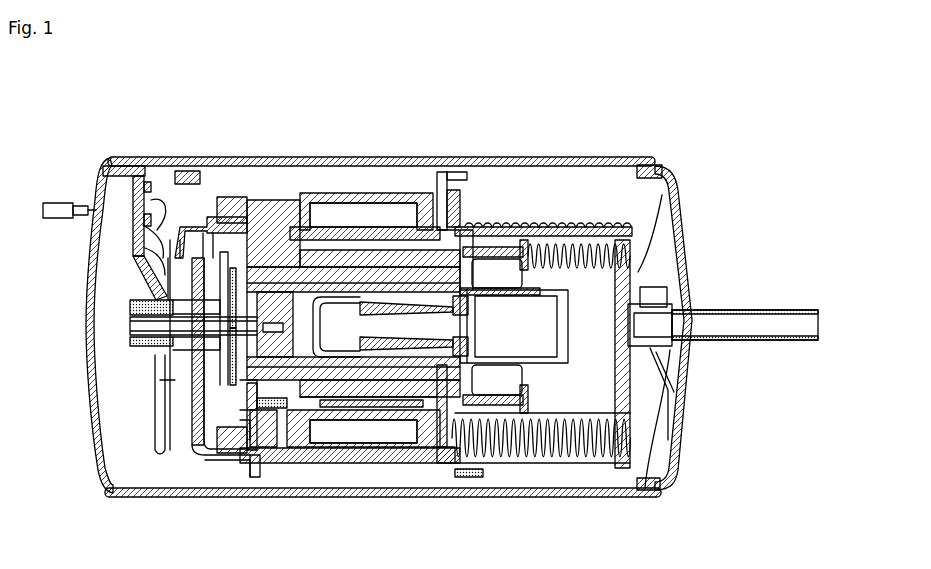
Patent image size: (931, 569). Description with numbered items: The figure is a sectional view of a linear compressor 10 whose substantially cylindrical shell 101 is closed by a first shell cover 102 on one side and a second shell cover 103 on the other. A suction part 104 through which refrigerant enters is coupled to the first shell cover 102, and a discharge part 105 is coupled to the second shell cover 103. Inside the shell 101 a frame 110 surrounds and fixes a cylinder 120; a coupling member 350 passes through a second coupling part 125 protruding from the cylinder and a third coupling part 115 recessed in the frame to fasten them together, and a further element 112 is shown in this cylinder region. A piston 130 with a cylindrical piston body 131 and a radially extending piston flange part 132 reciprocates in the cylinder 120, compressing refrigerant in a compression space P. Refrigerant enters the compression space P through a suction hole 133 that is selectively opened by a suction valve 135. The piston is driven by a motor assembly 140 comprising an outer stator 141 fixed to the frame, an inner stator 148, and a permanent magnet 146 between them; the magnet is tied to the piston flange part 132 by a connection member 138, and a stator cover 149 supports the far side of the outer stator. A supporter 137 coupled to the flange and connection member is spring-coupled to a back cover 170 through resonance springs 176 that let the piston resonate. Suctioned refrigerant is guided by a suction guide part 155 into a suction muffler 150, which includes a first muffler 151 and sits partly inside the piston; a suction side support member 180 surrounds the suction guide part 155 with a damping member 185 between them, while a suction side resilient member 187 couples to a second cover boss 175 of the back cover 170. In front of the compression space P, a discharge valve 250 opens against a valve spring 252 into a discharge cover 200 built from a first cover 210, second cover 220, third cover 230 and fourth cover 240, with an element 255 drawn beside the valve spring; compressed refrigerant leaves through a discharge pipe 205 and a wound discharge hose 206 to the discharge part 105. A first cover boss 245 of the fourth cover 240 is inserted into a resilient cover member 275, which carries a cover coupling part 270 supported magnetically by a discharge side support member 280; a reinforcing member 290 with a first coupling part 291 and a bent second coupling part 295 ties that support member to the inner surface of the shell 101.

The linear compressor 10 is at (566, 112).
The shell 101 is at (222, 158).
The first shell cover 102 is at (686, 216).
The second shell cover 103 is at (92, 420).
The suction part 104 is at (786, 308).
The discharge part 105 is at (57, 200).
The frame 110 is at (255, 197).
The rotor core 112 is at (296, 250).
The third coupling part 115 is at (280, 395).
The cylinder 120 is at (272, 200).
The second coupling part 125 is at (268, 415).
The piston 130 is at (250, 418).
The piston body 131 is at (350, 415).
The piston flange part 132 is at (456, 440).
The suction hole 133 is at (292, 402).
The suction valve 135 is at (250, 345).
The supporter 137 is at (493, 240).
The connection member 138 is at (460, 240).
The motor assembly 140 is at (326, 190).
The outer stator 141 is at (345, 203).
The permanent magnet 146 is at (355, 227).
The inner stator 148 is at (386, 228).
The stator cover 149 is at (442, 172).
The suction muffler 150 is at (553, 440).
The first muffler 151 is at (507, 437).
The suction guide part 155 is at (666, 358).
The back cover 170 is at (597, 228).
The second cover boss 175 is at (652, 205).
The resonance springs 176 is at (592, 450).
The suction side support member 180 is at (650, 482).
The damping member 185 is at (668, 385).
The suction side resilient member 187 is at (640, 288).
The discharge cover 200 is at (192, 214).
The discharge pipe 205 is at (145, 248).
The discharge hose 206 is at (157, 437).
The first cover 210 is at (252, 477).
The second cover 220 is at (232, 470).
The third cover 230 is at (185, 415).
The fourth cover 240 is at (175, 395).
The first cover boss 245 is at (172, 243).
The discharge valve 250 is at (230, 357).
The valve spring 252 is at (228, 275).
The friction lining 255 is at (210, 300).
The cover coupling part 270 is at (190, 310).
The resilient cover member 275 is at (170, 378).
The discharge side support member 280 is at (143, 200).
The reinforcing member 290 is at (153, 156).
The first coupling part 291 is at (157, 207).
The second coupling part 295 is at (172, 171).
The coupling member 350 is at (265, 412).
The compression space P is at (248, 314).